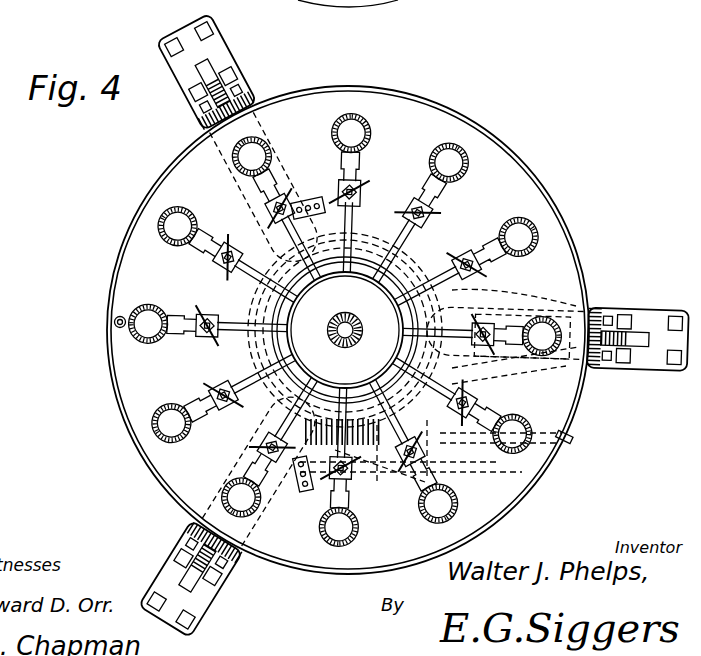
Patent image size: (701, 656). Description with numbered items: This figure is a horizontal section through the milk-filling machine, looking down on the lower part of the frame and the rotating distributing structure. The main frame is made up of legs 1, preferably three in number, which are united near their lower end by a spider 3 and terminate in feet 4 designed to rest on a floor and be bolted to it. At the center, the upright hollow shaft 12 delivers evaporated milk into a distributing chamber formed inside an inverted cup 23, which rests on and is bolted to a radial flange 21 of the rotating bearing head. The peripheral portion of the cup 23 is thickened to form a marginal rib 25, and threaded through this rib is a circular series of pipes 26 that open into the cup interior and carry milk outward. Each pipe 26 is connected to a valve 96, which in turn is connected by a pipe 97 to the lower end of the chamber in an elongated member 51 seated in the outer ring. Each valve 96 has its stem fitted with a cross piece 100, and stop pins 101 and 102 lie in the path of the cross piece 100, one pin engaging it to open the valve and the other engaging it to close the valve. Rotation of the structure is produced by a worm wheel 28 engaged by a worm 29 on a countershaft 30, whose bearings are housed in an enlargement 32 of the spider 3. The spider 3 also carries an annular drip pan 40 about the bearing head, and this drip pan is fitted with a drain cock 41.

The legs 1 is at (262, 96).
The spider 3 is at (417, 256).
The feet 4 is at (222, 46).
The hollow shaft 12 is at (345, 330).
The radial flange 21 is at (328, 309).
The inverted cup 23 is at (345, 342).
The marginal rib 25 is at (386, 290).
The pipes 26 is at (268, 273).
The worm wheel 28 is at (489, 380).
The worm 29 is at (371, 486).
The countershaft 30 is at (566, 446).
The enlargement 32 is at (444, 474).
The drip pan 40 is at (123, 413).
The drain cock 41 is at (115, 328).
The elongated member 51 is at (156, 344).
The valve 96 is at (361, 201).
The pipe 97 is at (259, 458).
The cross piece 100 is at (204, 344).
The stop pin 101 is at (311, 200).
The stop pin 102 is at (302, 492).